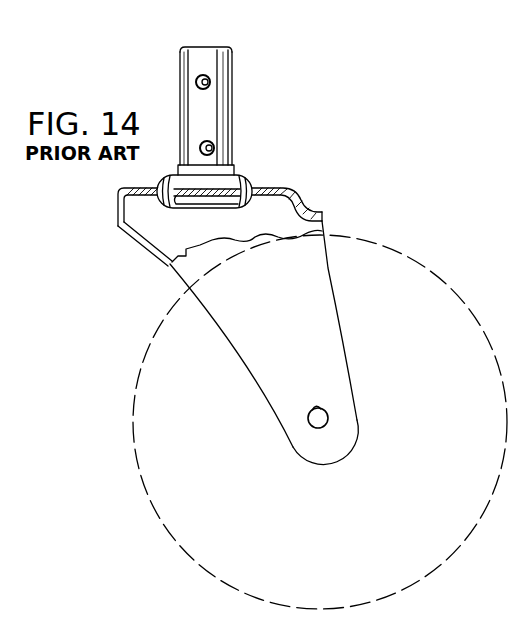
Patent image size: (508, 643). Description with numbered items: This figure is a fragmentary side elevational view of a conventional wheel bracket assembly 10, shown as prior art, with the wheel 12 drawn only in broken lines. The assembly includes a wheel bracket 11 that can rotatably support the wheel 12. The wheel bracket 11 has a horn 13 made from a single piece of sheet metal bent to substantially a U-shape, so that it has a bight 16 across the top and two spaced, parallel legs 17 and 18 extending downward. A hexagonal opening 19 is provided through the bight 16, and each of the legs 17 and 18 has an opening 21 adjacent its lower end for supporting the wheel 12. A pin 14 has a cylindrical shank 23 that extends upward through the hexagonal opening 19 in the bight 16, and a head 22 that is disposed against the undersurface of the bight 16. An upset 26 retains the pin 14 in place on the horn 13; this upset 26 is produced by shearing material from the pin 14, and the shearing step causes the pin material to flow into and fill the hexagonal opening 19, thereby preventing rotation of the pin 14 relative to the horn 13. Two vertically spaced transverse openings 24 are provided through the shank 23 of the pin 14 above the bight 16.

The wheel bracket assembly 10 is at (348, 168).
The wheel bracket 11 is at (275, 158).
The wheel 12 is at (428, 267).
The horn 13 is at (327, 213).
The pin 14 is at (233, 62).
The bight 16 is at (293, 190).
The leg 17 is at (172, 253).
The leg 18 is at (247, 303).
The hexagonal opening 19 is at (170, 214).
The opening 21 is at (314, 426).
The head 22 is at (200, 200).
The cylindrical shank 23 is at (203, 60).
The transverse openings 24 is at (210, 84).
The upset 26 is at (165, 177).